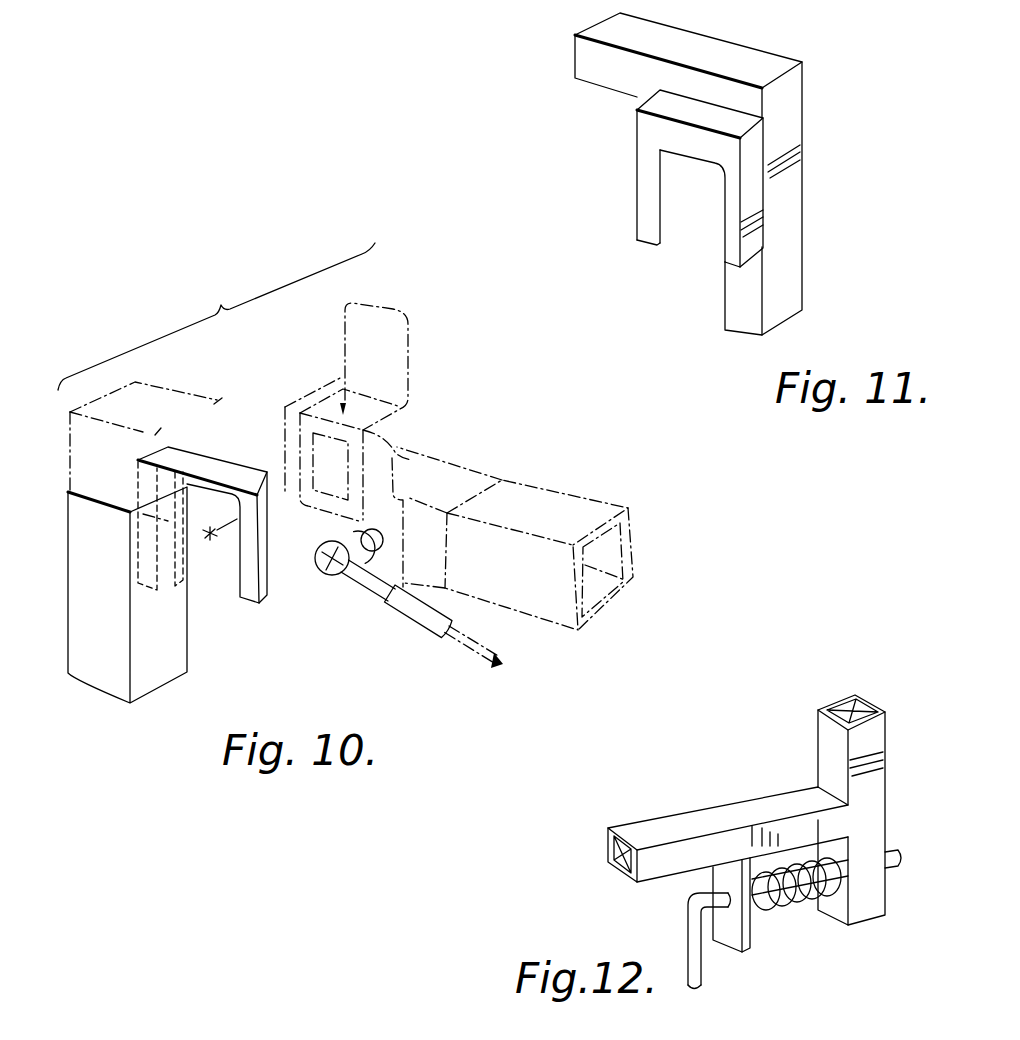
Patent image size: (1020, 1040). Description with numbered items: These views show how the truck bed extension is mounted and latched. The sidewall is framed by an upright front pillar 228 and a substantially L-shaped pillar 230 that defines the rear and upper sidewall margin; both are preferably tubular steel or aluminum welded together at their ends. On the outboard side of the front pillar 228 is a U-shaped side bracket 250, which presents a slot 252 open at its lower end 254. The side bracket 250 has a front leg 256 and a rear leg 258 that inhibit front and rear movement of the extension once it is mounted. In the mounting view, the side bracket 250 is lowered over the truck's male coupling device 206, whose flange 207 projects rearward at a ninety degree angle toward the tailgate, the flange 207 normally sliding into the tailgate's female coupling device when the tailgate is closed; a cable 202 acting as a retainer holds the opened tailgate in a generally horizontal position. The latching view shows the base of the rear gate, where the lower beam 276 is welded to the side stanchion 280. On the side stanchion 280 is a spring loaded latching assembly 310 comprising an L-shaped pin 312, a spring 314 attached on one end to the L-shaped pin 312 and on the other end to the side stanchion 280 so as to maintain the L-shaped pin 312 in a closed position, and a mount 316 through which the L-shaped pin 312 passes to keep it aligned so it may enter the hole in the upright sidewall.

In FIG. 10, the cable 202 is at (460, 672).
In FIG. 10, the male coupling device 206 is at (368, 300).
In FIG. 10, the flange 207 is at (418, 453).
In FIG. 11, the front pillar 228 is at (793, 131).
In FIG. 11, the L-shaped pillar 230 is at (692, 40).
In FIG. 10, the side bracket 250 is at (230, 460).
In FIG. 11, the side bracket 250 is at (668, 197).
In FIG. 11, the slot 252 is at (688, 257).
In FIG. 11, the lower end 254 is at (660, 246).
In FIG. 11, the front leg 256 is at (728, 203).
In FIG. 11, the rear leg 258 is at (645, 207).
In FIG. 12, the lower beam 276 is at (733, 805).
In FIG. 12, the side stanchion 280 is at (878, 730).
In FIG. 12, the spring loaded latching assembly 310 is at (783, 940).
In FIG. 12, the L-shaped pin 312 is at (688, 922).
In FIG. 12, the spring 314 is at (782, 907).
In FIG. 12, the mount 316 is at (733, 946).